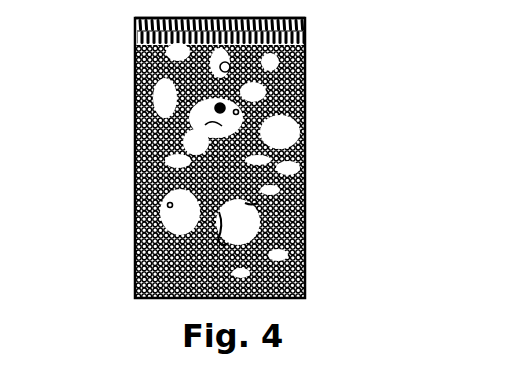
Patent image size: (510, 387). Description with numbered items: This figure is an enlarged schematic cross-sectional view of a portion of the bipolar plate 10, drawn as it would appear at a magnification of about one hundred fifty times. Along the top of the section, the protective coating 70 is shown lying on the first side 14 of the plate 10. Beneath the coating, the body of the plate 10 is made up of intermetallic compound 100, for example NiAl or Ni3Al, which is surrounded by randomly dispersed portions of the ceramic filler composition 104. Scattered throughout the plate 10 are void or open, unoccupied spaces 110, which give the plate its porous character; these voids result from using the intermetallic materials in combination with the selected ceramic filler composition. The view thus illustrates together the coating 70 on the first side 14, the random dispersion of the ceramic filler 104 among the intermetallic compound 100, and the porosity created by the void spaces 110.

The bipolar plate 10 is at (306, 80).
The first side 14 is at (142, 18).
The protective coating 70 is at (306, 29).
The intermetallic compound 100 is at (135, 78).
The ceramic filler composition 104 is at (135, 183).
The void spaces 110 is at (165, 123).